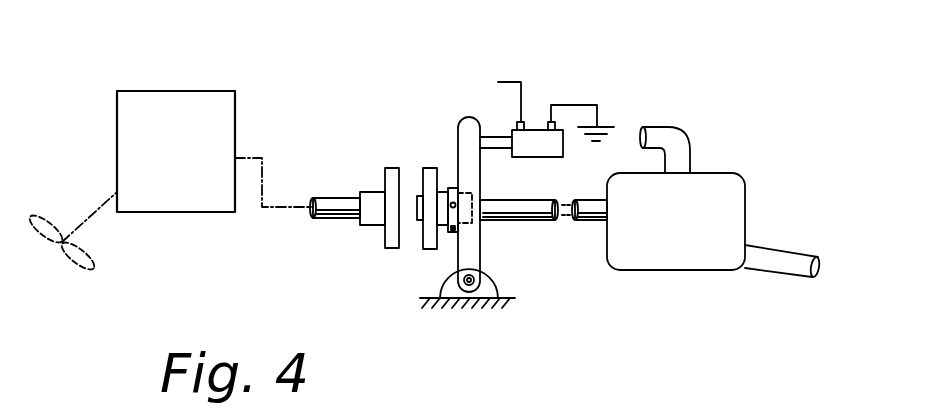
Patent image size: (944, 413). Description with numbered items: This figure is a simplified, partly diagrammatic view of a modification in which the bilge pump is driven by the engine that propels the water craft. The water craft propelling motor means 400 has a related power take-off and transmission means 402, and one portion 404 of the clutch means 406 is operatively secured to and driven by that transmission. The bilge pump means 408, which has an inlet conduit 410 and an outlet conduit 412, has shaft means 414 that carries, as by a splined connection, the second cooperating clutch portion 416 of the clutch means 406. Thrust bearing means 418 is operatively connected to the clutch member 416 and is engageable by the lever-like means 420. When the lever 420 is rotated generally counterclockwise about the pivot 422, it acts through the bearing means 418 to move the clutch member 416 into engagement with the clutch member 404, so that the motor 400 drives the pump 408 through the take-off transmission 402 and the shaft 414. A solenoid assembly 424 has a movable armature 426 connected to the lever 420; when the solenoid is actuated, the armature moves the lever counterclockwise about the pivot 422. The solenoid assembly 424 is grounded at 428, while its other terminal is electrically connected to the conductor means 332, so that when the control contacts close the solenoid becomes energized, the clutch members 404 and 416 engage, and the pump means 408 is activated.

The water craft propelling motor means 400 is at (170, 102).
The power take-off and transmission means 402 is at (322, 213).
The clutch portion 404 is at (392, 170).
The clutch means 406 is at (400, 255).
The second cooperating clutch portion 416 is at (433, 170).
The thrust bearing means 418 is at (452, 231).
The lever-like means 420 is at (472, 250).
The pivot 422 is at (468, 287).
The shaft means 414 is at (581, 220).
The movable armature 426 is at (493, 137).
The solenoid assembly 424 is at (540, 153).
The conductor means 332 is at (498, 82).
The ground 428 is at (605, 127).
The outlet conduit 412 is at (667, 127).
The bilge pump means 408 is at (748, 202).
The inlet conduit 410 is at (785, 258).